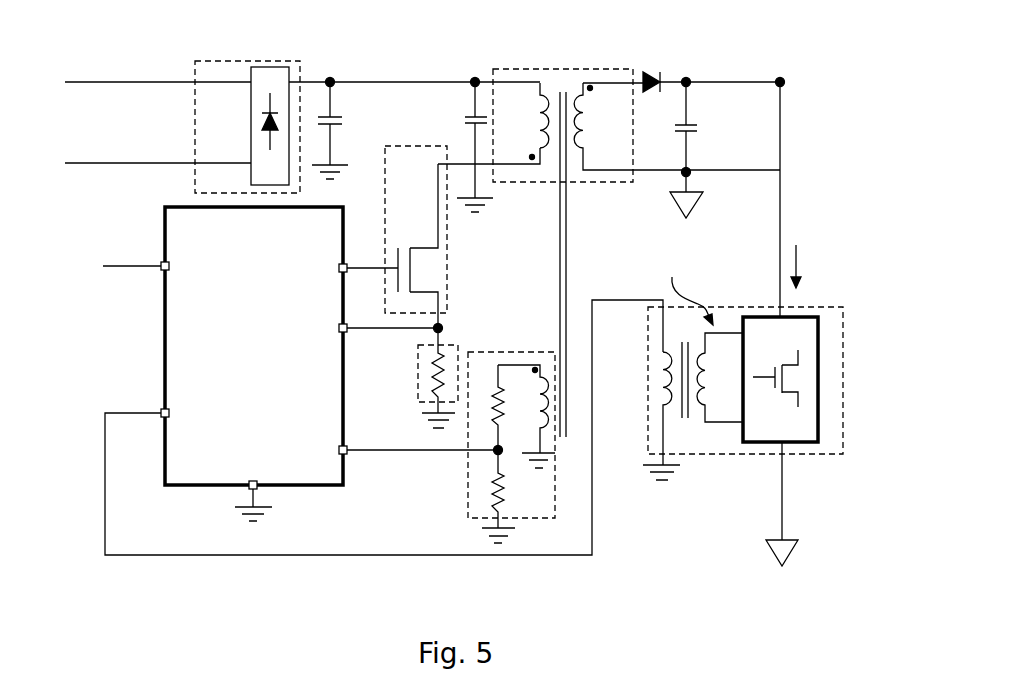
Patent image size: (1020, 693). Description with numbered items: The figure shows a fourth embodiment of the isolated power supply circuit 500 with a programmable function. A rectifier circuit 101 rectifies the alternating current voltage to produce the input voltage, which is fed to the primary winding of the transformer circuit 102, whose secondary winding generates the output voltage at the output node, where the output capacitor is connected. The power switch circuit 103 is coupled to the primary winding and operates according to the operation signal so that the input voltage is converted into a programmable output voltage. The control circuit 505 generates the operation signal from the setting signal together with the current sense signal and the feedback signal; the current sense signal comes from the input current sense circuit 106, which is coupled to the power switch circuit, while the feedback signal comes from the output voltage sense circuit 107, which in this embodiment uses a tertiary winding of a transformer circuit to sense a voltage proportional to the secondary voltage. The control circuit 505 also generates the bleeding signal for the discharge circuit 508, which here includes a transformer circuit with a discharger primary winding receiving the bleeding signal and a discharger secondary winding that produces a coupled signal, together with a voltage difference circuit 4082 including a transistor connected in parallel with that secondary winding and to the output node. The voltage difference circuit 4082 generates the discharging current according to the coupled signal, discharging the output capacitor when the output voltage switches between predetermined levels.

The isolated power supply circuit 500 is at (862, 54).
The rectifier circuit 101 is at (232, 186).
The transformer circuit 102 is at (573, 68).
The power switch circuit 103 is at (420, 178).
The input current sense circuit 106 is at (418, 365).
The output voltage sense circuit 107 is at (468, 472).
The control circuit 505 is at (210, 478).
The discharge circuit 508 is at (718, 306).
The voltage difference circuit 4082 is at (819, 387).